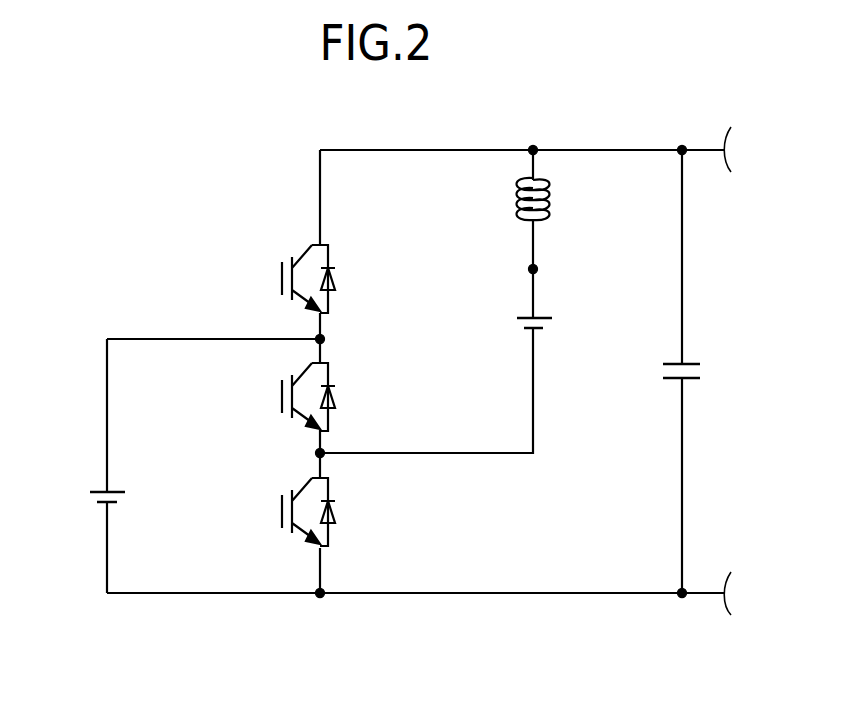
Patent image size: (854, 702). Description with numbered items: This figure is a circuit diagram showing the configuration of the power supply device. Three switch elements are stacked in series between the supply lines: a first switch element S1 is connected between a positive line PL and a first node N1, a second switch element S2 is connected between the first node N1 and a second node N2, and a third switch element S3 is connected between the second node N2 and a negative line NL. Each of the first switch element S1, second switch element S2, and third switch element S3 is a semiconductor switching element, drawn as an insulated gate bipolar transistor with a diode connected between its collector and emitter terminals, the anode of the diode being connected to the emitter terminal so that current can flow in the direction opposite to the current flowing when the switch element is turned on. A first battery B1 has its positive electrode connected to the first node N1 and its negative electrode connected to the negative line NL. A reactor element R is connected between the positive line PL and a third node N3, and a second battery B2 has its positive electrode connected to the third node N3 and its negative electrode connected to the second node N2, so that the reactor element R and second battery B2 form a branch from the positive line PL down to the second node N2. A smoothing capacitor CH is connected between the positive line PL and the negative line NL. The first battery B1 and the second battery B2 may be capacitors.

The first switch element S1 is at (294, 279).
The second switch element S2 is at (294, 397).
The third switch element S3 is at (294, 512).
The first node N1 is at (325, 337).
The second node N2 is at (325, 455).
The third node N3 is at (538, 268).
The first battery B1 is at (93, 501).
The second battery B2 is at (521, 327).
The reactor element R is at (543, 199).
The smoothing capacitor CH is at (693, 376).
The positive line PL is at (613, 148).
The negative line NL is at (615, 596).